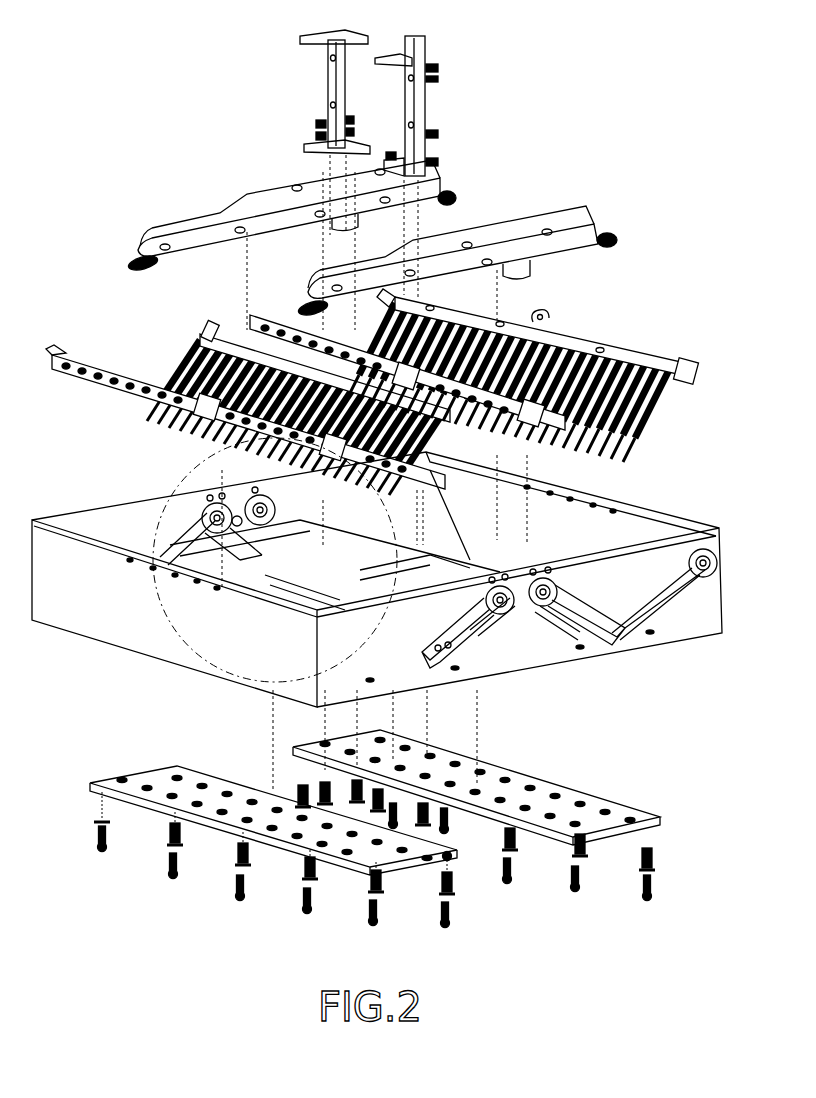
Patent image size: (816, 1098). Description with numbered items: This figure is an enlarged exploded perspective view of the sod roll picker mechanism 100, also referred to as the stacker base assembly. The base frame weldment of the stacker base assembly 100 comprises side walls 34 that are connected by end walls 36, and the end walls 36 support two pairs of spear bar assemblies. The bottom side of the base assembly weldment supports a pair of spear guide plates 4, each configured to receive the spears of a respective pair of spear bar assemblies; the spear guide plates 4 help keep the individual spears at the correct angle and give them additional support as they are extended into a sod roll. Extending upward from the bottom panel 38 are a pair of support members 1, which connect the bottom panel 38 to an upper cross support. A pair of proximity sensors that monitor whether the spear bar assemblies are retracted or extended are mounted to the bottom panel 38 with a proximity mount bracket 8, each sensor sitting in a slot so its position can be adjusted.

The sod roll picker mechanism 100 is at (105, 176).
The support members 1 is at (326, 38).
The proximity mount bracket 8 is at (422, 38).
The side walls 34 is at (656, 524).
The end walls 36 is at (94, 518).
The bottom panel 38 is at (190, 524).
The spear guide plates 4 is at (610, 853).